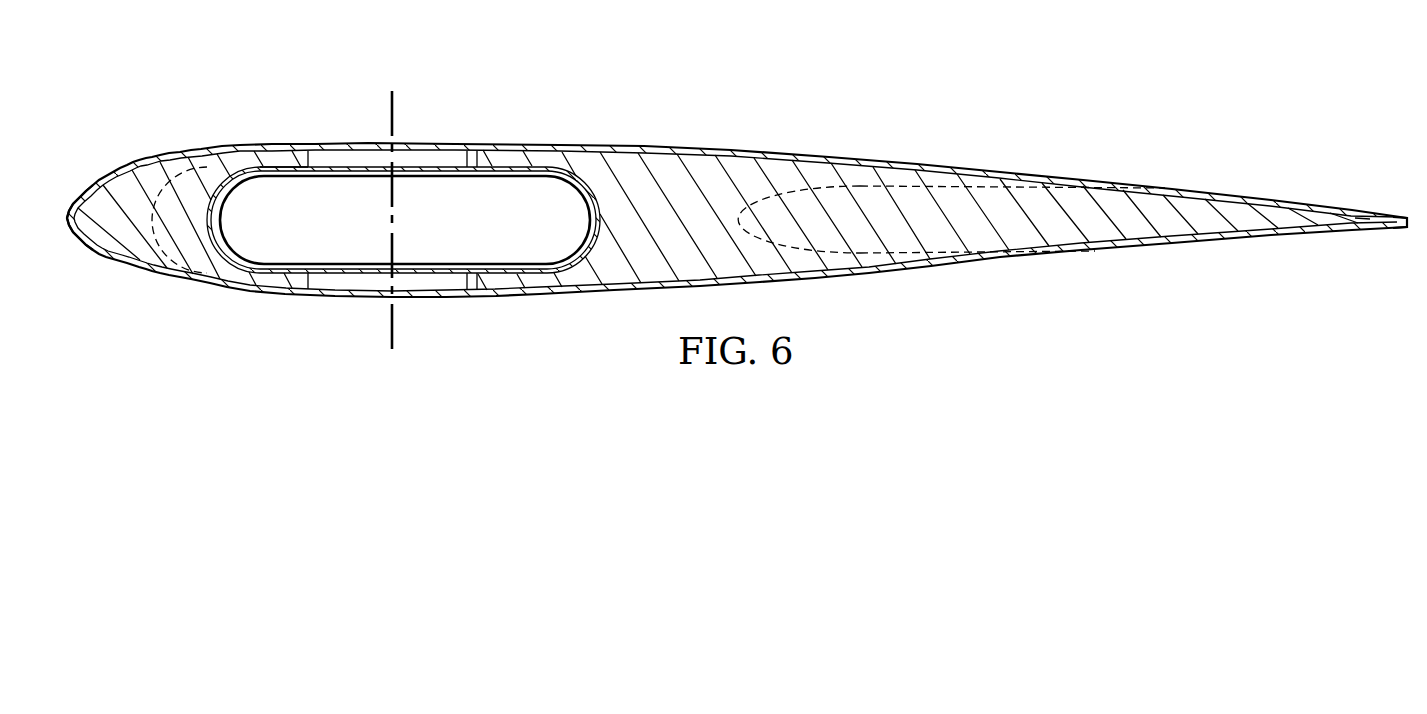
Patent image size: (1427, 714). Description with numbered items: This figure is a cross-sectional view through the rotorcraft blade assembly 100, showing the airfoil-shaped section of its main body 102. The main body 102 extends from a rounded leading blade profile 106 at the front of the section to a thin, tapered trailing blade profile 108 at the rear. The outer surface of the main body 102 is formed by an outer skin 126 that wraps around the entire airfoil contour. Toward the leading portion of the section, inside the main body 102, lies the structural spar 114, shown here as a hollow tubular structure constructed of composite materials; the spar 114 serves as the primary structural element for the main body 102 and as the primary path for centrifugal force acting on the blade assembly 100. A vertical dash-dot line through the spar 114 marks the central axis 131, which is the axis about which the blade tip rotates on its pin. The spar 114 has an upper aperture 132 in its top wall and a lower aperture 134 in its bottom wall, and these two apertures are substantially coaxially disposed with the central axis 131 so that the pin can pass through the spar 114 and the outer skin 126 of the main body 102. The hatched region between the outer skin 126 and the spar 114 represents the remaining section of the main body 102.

The rotorcraft blade assembly 100 is at (737, 192).
The main body 102 is at (743, 152).
The leading blade profile 106 is at (66, 218).
The trailing blade profile 108 is at (1408, 222).
The structural spar 114 is at (281, 172).
The outer skin 126 is at (907, 162).
The central axis 131 is at (394, 112).
The upper aperture 132 is at (318, 172).
The lower aperture 134 is at (318, 280).